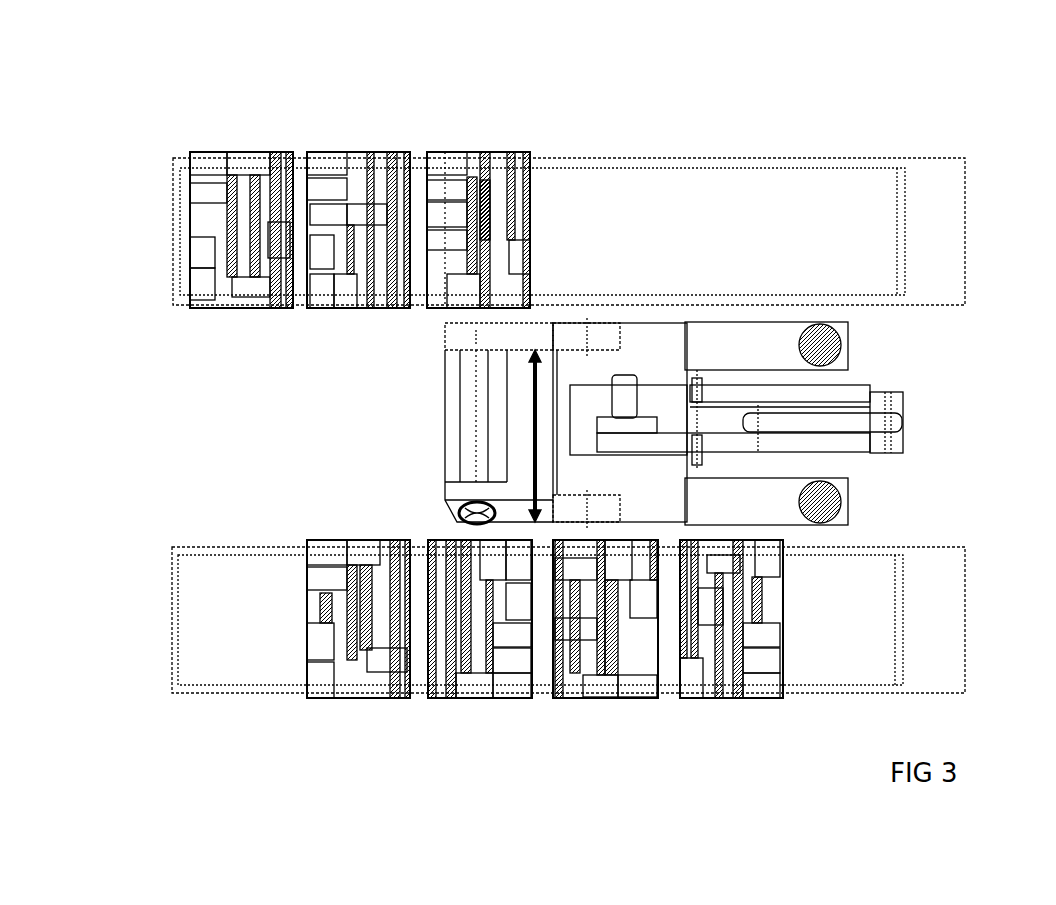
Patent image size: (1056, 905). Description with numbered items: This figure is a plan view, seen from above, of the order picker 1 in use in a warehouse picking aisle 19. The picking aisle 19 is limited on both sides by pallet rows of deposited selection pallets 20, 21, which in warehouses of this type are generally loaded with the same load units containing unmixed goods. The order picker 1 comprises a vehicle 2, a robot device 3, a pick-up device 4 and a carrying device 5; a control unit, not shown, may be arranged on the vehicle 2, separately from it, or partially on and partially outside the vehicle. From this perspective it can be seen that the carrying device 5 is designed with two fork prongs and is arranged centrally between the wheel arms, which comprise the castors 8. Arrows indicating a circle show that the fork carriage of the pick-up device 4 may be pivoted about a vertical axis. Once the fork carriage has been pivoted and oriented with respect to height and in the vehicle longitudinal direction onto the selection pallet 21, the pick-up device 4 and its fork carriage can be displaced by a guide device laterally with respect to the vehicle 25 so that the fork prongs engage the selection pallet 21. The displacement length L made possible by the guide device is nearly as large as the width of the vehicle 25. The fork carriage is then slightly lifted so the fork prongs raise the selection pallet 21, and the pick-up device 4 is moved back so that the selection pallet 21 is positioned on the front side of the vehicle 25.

The order picker 1 is at (702, 322).
The vehicle 2 is at (675, 162).
The robot device 3 is at (605, 473).
The pick-up device 4 is at (272, 768).
The carrying device 5 is at (690, 405).
The castors 8 is at (830, 345).
The picking aisle 19 is at (230, 402).
The selection pallet 20 is at (360, 195).
The selection pallet 21 is at (480, 195).
The vehicle 25 is at (645, 325).
The displacement length L is at (535, 440).